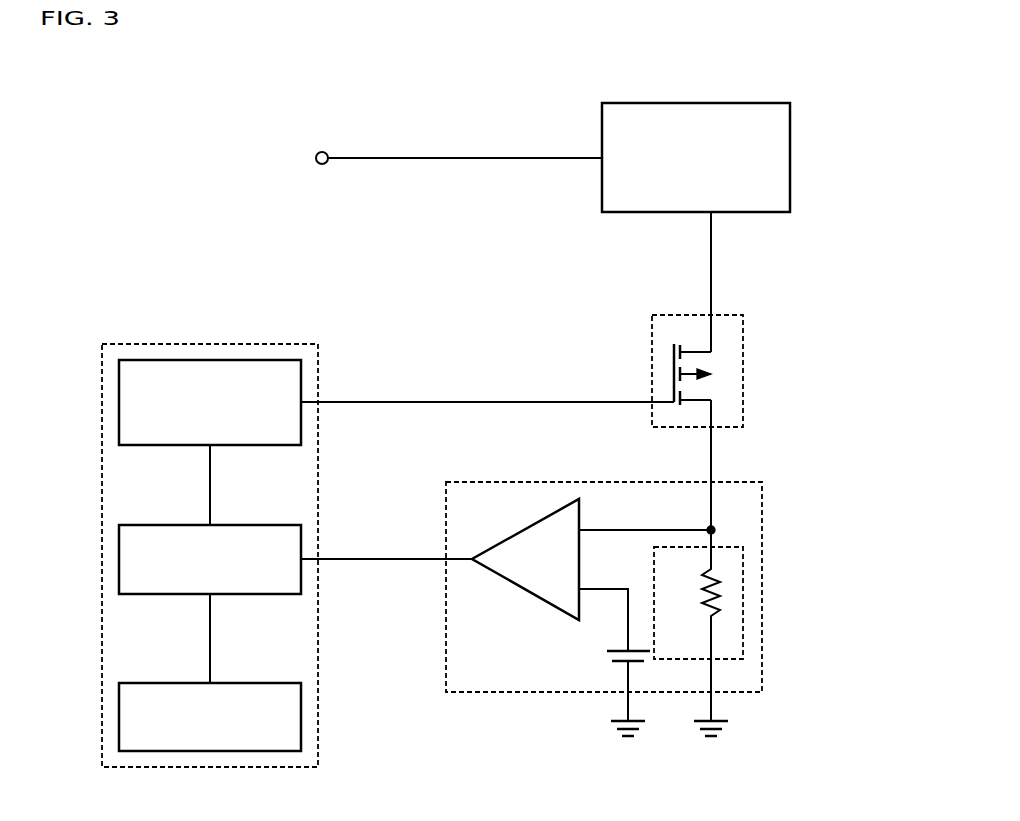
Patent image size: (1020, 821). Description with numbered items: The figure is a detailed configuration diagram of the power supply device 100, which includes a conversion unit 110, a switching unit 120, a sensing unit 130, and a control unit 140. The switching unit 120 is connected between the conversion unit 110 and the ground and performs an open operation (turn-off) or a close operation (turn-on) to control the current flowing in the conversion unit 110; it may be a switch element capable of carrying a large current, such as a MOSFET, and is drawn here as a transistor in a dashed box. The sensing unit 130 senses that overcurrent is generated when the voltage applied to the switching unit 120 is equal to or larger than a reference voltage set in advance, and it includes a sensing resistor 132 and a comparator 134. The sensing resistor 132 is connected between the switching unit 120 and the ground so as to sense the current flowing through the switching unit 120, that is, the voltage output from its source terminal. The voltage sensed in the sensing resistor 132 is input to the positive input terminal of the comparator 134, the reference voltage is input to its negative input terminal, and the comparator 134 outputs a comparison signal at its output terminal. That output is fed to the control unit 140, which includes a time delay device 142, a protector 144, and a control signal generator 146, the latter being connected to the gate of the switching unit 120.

The power supply device 100 is at (73, 83).
The conversion unit 110 is at (790, 158).
The switching unit 120 is at (743, 373).
The sensing unit 130 is at (762, 530).
The sensing resistor 132 is at (743, 604).
The comparator 134 is at (550, 607).
The control unit 140 is at (210, 344).
The time delay device 142 is at (119, 720).
The protector 144 is at (119, 562).
The control signal generator 146 is at (119, 403).